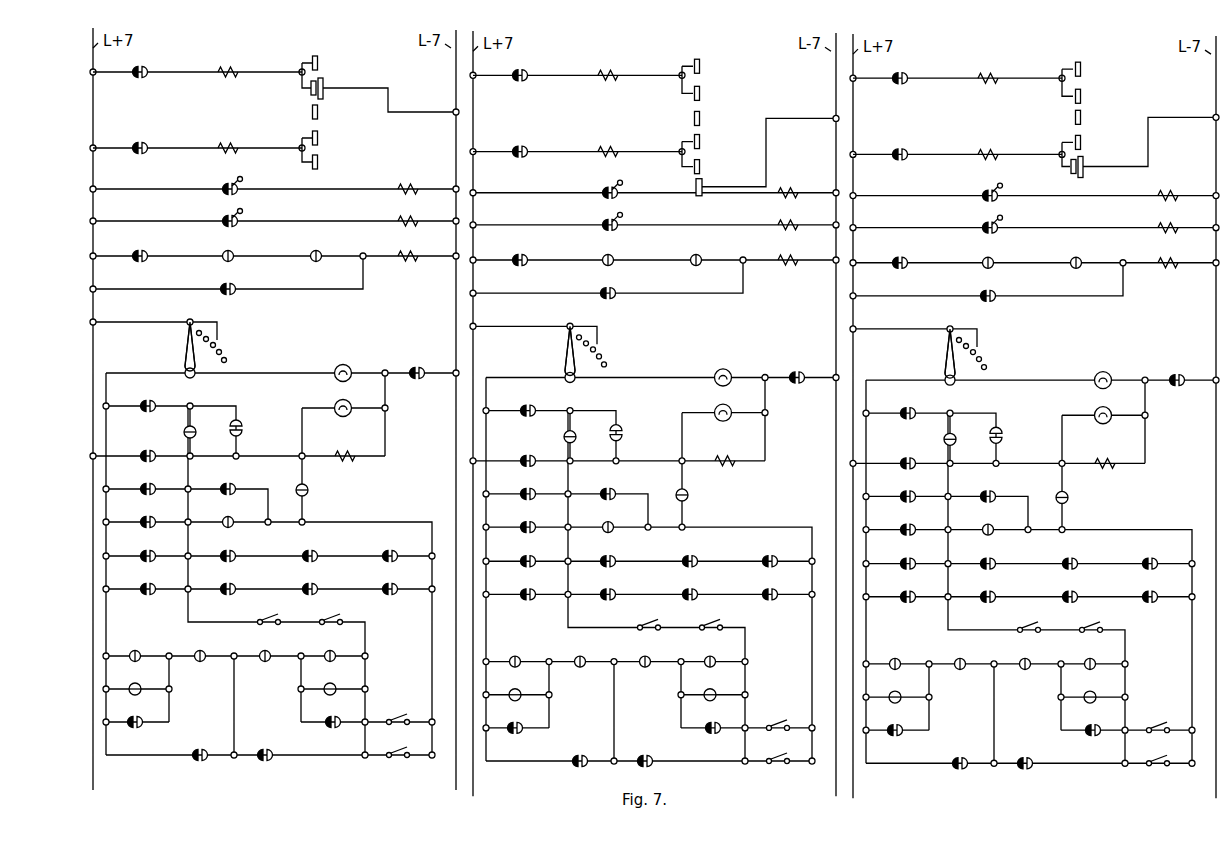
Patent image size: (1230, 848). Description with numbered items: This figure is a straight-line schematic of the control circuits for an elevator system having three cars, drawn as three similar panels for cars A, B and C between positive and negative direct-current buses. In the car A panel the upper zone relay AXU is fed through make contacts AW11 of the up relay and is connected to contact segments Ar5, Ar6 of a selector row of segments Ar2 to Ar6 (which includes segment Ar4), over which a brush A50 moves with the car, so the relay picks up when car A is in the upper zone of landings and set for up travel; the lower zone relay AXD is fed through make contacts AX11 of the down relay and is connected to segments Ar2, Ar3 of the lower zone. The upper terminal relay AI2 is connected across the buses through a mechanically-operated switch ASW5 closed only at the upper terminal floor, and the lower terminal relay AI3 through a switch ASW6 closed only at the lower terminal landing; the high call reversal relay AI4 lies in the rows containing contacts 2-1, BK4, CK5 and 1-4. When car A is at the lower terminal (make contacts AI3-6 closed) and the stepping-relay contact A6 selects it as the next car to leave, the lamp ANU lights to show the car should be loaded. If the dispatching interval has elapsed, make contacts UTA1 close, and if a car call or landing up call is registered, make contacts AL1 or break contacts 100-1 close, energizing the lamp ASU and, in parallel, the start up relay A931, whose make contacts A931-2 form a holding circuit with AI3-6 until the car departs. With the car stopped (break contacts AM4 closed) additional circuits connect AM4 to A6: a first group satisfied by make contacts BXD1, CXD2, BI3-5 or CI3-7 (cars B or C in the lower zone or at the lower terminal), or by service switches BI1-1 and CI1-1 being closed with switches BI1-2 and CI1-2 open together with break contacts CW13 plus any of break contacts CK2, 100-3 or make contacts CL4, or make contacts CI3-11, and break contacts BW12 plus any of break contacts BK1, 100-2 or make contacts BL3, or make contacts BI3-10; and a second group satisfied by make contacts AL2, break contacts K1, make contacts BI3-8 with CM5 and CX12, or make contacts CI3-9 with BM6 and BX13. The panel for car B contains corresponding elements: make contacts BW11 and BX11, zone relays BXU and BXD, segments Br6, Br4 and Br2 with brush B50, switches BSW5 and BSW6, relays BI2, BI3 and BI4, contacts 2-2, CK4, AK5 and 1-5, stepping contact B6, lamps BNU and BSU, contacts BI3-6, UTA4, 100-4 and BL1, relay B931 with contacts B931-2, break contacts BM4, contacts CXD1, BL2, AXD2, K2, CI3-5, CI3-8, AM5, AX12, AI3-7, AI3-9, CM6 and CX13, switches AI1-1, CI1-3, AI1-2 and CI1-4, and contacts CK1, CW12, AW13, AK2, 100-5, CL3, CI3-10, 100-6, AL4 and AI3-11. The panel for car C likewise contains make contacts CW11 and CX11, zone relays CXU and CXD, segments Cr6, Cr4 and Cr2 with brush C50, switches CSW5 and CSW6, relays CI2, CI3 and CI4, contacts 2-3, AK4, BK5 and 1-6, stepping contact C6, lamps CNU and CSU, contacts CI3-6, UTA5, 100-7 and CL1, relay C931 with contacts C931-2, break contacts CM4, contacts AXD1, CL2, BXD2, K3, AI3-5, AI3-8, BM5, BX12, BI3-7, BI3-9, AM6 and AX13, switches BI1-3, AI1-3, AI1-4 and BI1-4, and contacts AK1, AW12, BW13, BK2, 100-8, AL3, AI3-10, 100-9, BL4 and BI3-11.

The make contacts AW11 is at (146, 67).
The upper zone relay AXU is at (229, 67).
The contact segment Ar6 is at (322, 61).
The brush A50 is at (324, 85).
The contact segment Ar5 is at (308, 88).
The contact segment Ar4 is at (320, 113).
The contact segment Ar3 is at (320, 136).
The contact segment Ar2 is at (320, 164).
The make contacts AX11 is at (146, 143).
The lower zone relay AXD is at (229, 143).
The mechanically-operated switch ASW5 is at (222, 184).
The upper terminal relay AI2 is at (403, 185).
The mechanically-operated switch ASW6 is at (222, 216).
The lower terminal relay AI3 is at (403, 217).
The contact 2-1 is at (140, 252).
The contact BK4 is at (230, 252).
The contact CK5 is at (318, 252).
The high call reversal relay AI4 is at (404, 253).
The contact 1-4 is at (230, 285).
The contact of stepping relay A6 is at (172, 361).
The lamp ANU is at (352, 358).
The make contacts of lower terminal relay AI3-6 is at (428, 358).
The make contacts of up timing relay UTA1 is at (143, 398).
The break contacts of landing up call relay 100-1 is at (184, 432).
The make contacts of car call relay AL1 is at (242, 430).
The lamp ASU is at (342, 398).
The start up relay A931 is at (347, 451).
The make contacts of start up relay A931-2 is at (152, 464).
The break contacts AM4 is at (308, 492).
The make contacts of lower zone relay BXD BXD1 is at (156, 497).
The make contacts of car call relay AL2 is at (237, 483).
The make contacts CXD2 is at (156, 536).
The break contacts K1 is at (232, 518).
The make contacts BI3-5 is at (155, 570).
The make contacts BI3-8 is at (222, 552).
The make contacts CM5 is at (306, 552).
The make contacts CX12 is at (382, 552).
The make contacts CI3-7 is at (152, 594).
The make contacts CI3-9 is at (224, 585).
The make contacts BM6 is at (306, 585).
The make contacts BX13 is at (382, 585).
The manually-operated switch BI1-1 is at (270, 612).
The manually-operated switch CI1-1 is at (330, 618).
The break contacts BK1 is at (135, 649).
The break contacts BW12 is at (200, 649).
The break contacts CW13 is at (265, 662).
The break contacts CK2 is at (330, 649).
The break contacts of landing up call relay 100-2 is at (132, 680).
The make contacts BL3 is at (144, 718).
The make contacts BI3-10 is at (196, 751).
The break contacts of landing up call relay 100-3 is at (327, 680).
The make contacts CL4 is at (343, 718).
The manually-operated switch BI1-2 is at (398, 714).
The make contacts CI3-11 is at (268, 751).
The manually-operated switch CI1-2 is at (400, 740).
The contact BW11 is at (508, 67).
The resistor BXU is at (595, 67).
The relay contact Br6 is at (719, 60).
The relay contact Br4 is at (719, 117).
The relay contact Br2 is at (681, 178).
The brush B50 is at (721, 182).
The make contacts BX11 is at (507, 144).
The lower zone relay BXD is at (595, 144).
The switch contact BSW5 is at (590, 185).
The resistor BI2 is at (795, 185).
The switch contact BSW6 is at (590, 217).
The resistor BI3 is at (795, 217).
The contact 2-2 is at (508, 252).
The contact CK4 is at (625, 252).
The contact AK5 is at (713, 252).
The resistor BI4 is at (796, 252).
The contact 1-5 is at (622, 285).
The selector switch B6 is at (552, 350).
The relay coil BNU is at (726, 367).
The contact BI3-6 is at (796, 365).
The contact UTA4 is at (514, 400).
The contact 100-4 is at (543, 440).
The lamp BL1 is at (634, 433).
The relay coil BSU is at (707, 402).
The resistor B931 is at (724, 449).
The contact B931-2 is at (515, 470).
The contact BM4 is at (703, 495).
The contact CXD1 is at (512, 502).
The contact BL2 is at (601, 485).
The contact AXD2 is at (512, 537).
The contact K2 is at (621, 518).
The contact CI3-5 is at (512, 570).
The contact CI3-8 is at (595, 551).
The contact AM5 is at (704, 551).
The contact AX12 is at (783, 551).
The contact AI3-7 is at (512, 603).
The contact AI3-9 is at (595, 584).
The contact CM6 is at (704, 584).
The contact CX13 is at (783, 584).
The switch AI1-1 is at (640, 616).
The switch CI1-3 is at (729, 616).
The contact CK1 is at (505, 649).
The contact CW12 is at (580, 649).
The contact AW13 is at (647, 673).
The contact AK2 is at (720, 649).
The contact 100-5 is at (512, 686).
The contact CL3 is at (507, 719).
The contact CI3-10 is at (559, 749).
The contact 100-6 is at (707, 686).
The contact AL4 is at (705, 719).
The switch AI1-2 is at (774, 714).
The contact AI3-11 is at (667, 749).
The switch CI1-4 is at (774, 748).
The contact CW11 is at (888, 70).
The resistor CXU is at (975, 70).
The relay contact Cr6 is at (1100, 63).
The relay contact Cr4 is at (1100, 116).
The relay contact C50 is at (1103, 160).
The relay contact Cr2 is at (1054, 173).
The contact CX11 is at (887, 146).
The resistor CXD is at (975, 146).
The switch contact CSW5 is at (970, 188).
The resistor CI2 is at (1175, 188).
The switch contact CSW6 is at (970, 220).
The resistor CI3 is at (1175, 220).
The contact 2-3 is at (888, 255).
The contact AK4 is at (1005, 255).
The contact BK5 is at (1093, 255).
The resistor CI4 is at (1176, 255).
The contact 1-6 is at (1002, 288).
The selector switch C6 is at (932, 353).
The relay coil CNU is at (1106, 370).
The contact CI3-6 is at (1176, 368).
The contact UTA5 is at (894, 402).
The contact 100-7 is at (923, 442).
The lamp CL1 is at (1014, 435).
The relay coil CSU is at (1087, 404).
The resistor C931 is at (1104, 451).
The contact C931-2 is at (895, 473).
The contact CM4 is at (1083, 497).
The contact AXD1 is at (892, 505).
The contact CL2 is at (981, 487).
The contact BXD2 is at (892, 539).
The contact K3 is at (1001, 521).
The contact AI3-5 is at (892, 572).
The contact AI3-8 is at (975, 554).
The contact BM5 is at (1084, 554).
The contact BX12 is at (1163, 554).
The contact BI3-7 is at (892, 605).
The contact BI3-9 is at (975, 587).
The contact AM6 is at (1084, 587).
The contact AX13 is at (1163, 587).
The switch BI1-3 is at (1020, 619).
The switch AI1-3 is at (1109, 619).
The contact AK1 is at (885, 651).
The contact AW12 is at (959, 651).
The contact BW13 is at (1028, 675).
The contact BK2 is at (1100, 651).
The contact 100-8 is at (892, 688).
The contact AL3 is at (887, 721).
The contact AI3-10 is at (939, 751).
The contact 100-9 is at (1087, 688).
The contact BL4 is at (1085, 721).
The switch AI1-4 is at (1154, 716).
The contact BI3-11 is at (1047, 751).
The switch BI1-4 is at (1154, 750).